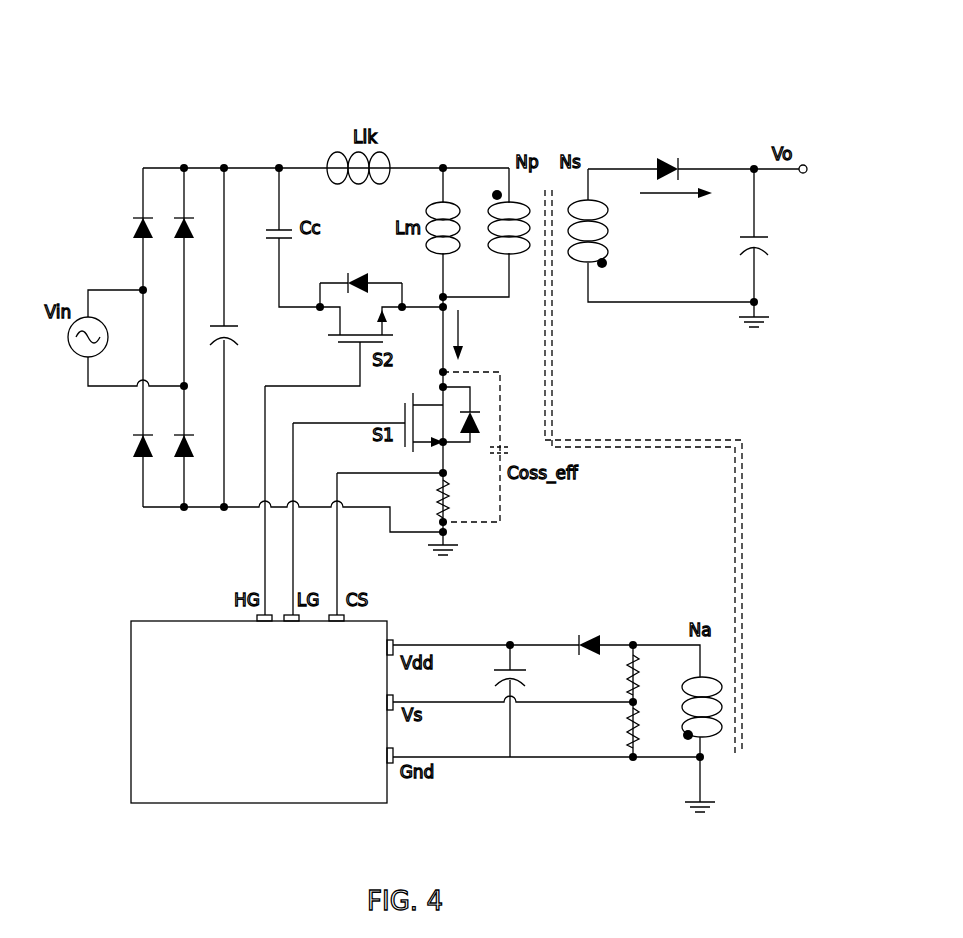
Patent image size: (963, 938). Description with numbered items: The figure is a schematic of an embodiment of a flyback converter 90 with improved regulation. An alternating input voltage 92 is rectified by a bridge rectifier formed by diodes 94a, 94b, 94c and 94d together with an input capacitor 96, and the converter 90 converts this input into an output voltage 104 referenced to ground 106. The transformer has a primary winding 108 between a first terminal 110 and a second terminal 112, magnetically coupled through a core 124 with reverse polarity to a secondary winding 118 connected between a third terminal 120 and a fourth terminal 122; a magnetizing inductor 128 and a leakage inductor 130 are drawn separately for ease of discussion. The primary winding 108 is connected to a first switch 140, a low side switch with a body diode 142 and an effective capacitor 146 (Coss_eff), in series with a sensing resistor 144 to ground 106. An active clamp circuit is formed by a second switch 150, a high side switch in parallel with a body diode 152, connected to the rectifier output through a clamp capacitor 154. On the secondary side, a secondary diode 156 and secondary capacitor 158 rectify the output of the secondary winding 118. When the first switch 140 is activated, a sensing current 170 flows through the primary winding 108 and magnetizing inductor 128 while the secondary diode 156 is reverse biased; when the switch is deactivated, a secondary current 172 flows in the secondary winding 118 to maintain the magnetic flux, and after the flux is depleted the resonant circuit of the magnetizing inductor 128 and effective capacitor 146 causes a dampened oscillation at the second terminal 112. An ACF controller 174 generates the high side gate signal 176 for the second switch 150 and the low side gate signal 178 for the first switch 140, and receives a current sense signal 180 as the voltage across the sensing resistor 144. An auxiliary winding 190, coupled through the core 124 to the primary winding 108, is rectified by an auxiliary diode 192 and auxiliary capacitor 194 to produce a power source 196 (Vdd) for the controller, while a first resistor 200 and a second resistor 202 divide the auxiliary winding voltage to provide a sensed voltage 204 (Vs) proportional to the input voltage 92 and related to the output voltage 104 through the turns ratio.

The flyback converter 90 is at (593, 46).
The alternating input voltage 92 is at (81, 358).
The diode 94a is at (148, 217).
The diode 94b is at (189, 217).
The diode 94c is at (148, 433).
The diode 94d is at (189, 433).
The input capacitor 96 is at (214, 326).
The output voltage 104 is at (806, 177).
The ground 106 is at (454, 535).
The primary winding 108 is at (502, 254).
The first terminal 110 is at (461, 151).
The second terminal 112 is at (510, 297).
The secondary winding 118 is at (588, 207).
The third terminal 120 is at (614, 168).
The fourth terminal 122 is at (582, 302).
The core 124 is at (554, 380).
The magnetizing inductor 128 is at (430, 203).
The leakage inductor 130 is at (389, 155).
The first switch 140 is at (401, 450).
The body diode 142 is at (481, 422).
The sensing resistor 144 is at (447, 497).
The effective capacitor 146 is at (507, 449).
The second switch 150 is at (338, 344).
The body diode 152 is at (352, 273).
The clamp capacitor 154 is at (270, 246).
The secondary diode 156 is at (663, 159).
The secondary capacitor 158 is at (739, 240).
The sensing current 170 is at (458, 336).
The secondary current 172 is at (683, 197).
The ACF controller 174 is at (262, 709).
The high side gate signal 176 is at (265, 568).
The low side gate signal 178 is at (293, 565).
The current sense signal 180 is at (337, 566).
The auxiliary winding 190 is at (691, 678).
The auxiliary diode 192 is at (582, 635).
The auxiliary capacitor 194 is at (533, 671).
The power source 196 is at (443, 645).
The first resistor 200 is at (625, 685).
The second resistor 202 is at (625, 730).
The sensed voltage 204 is at (452, 702).